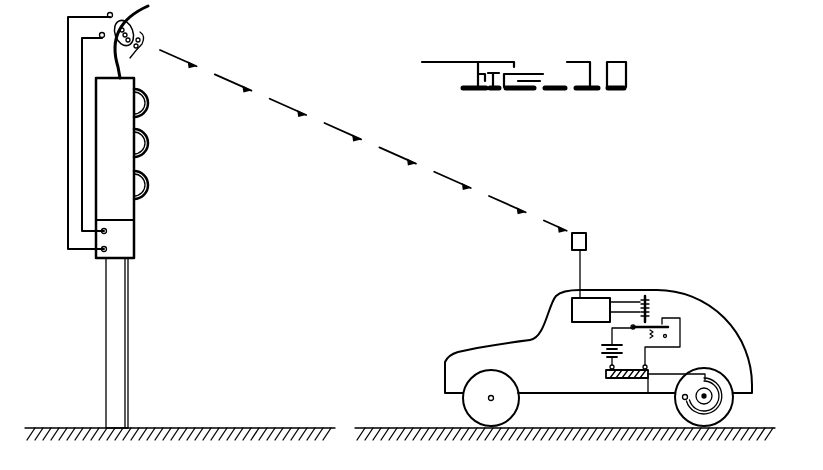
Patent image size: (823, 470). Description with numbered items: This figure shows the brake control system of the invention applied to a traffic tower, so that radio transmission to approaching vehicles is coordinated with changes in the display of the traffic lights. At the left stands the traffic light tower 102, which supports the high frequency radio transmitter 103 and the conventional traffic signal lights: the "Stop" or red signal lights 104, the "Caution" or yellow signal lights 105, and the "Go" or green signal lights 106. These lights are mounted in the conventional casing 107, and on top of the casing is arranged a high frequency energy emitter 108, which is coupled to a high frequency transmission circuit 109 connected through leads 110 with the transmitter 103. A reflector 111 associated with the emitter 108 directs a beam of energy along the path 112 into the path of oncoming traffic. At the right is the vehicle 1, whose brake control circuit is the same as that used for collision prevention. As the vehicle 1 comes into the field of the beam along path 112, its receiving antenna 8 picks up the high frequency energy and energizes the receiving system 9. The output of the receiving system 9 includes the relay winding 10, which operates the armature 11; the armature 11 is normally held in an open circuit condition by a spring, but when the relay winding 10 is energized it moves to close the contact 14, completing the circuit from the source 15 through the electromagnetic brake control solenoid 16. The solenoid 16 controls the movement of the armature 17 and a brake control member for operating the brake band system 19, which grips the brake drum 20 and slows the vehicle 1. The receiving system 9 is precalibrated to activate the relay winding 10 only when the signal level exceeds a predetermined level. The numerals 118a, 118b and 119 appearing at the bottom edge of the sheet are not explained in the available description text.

The vehicle 1 is at (505, 348).
The receiving antenna 8 is at (583, 253).
The receiving system 9 is at (572, 305).
The relay winding 10 is at (642, 302).
The armature 11 is at (650, 322).
The contact 14 is at (663, 320).
The source 15 is at (595, 345).
The electromagnetic brake control solenoid 16 is at (675, 372).
The armature 17 is at (642, 390).
The brake band system 19 is at (713, 383).
The brake drum 20 is at (707, 408).
The traffic light tower 102 is at (128, 314).
The high frequency radio transmitter 103 is at (136, 243).
The red signal lights 104 is at (147, 102).
The yellow signal lights 105 is at (150, 140).
The green signal lights 106 is at (150, 182).
The casing 107 is at (107, 113).
The high frequency energy emitter 108 is at (140, 43).
The high frequency transmission circuit 109 is at (110, 21).
The leads 110 is at (73, 172).
The reflector 111 is at (113, 52).
The path 112 is at (259, 90).
The element 118a is at (130, 461).
The element 118b is at (33, 461).
The element 119 is at (79, 462).